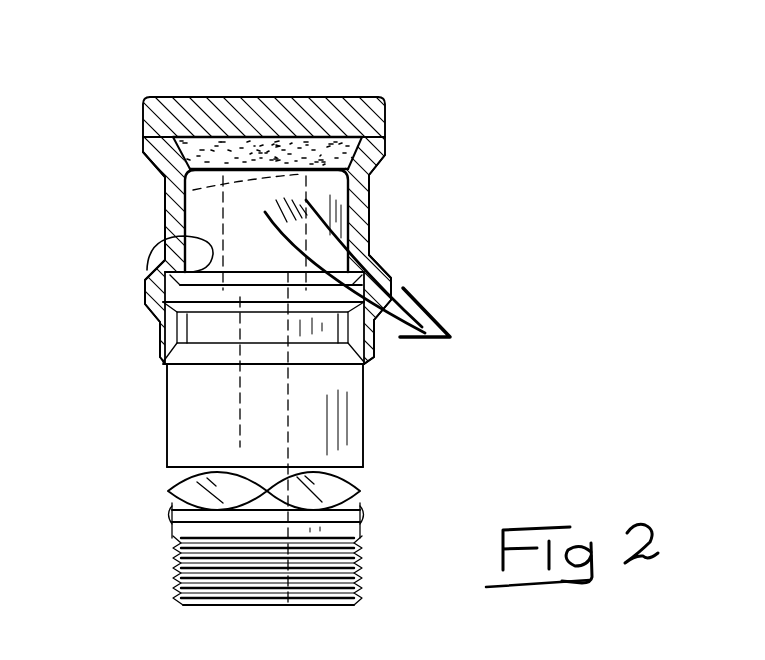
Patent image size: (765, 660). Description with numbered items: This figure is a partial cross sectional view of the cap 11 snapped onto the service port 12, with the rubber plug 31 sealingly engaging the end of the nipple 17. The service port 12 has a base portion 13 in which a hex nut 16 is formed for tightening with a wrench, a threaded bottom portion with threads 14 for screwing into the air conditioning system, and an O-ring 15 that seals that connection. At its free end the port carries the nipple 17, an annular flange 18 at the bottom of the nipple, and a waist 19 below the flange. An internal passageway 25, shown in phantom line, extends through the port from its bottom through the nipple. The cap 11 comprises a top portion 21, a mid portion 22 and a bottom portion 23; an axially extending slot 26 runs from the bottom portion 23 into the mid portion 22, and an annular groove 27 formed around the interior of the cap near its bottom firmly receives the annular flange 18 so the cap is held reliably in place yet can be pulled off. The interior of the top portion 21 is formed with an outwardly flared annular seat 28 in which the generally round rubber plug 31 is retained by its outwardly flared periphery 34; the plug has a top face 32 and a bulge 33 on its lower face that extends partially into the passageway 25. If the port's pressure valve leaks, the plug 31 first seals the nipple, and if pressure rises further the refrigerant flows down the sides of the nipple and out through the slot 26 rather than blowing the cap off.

The cap 11 is at (513, 177).
The service port 12 is at (615, 368).
The base portion 13 is at (370, 438).
The external threads 14 is at (362, 557).
The O-ring 15 is at (173, 533).
The hex nut 16 is at (368, 492).
The nipple 17 is at (203, 218).
The annular flange 18 is at (213, 298).
The waist 19 is at (263, 333).
The top portion 21 is at (351, 93).
The mid portion 22 is at (394, 205).
The bottom portion 23 is at (380, 350).
The passageway 25 is at (185, 183).
The axially extending slot 26 is at (378, 278).
The annular groove 27 is at (163, 243).
The flared annular seat 28 is at (147, 156).
The rubber plug 31 is at (243, 130).
The top face 32 is at (352, 112).
The bulge 33 is at (312, 90).
The periphery 34 is at (190, 152).